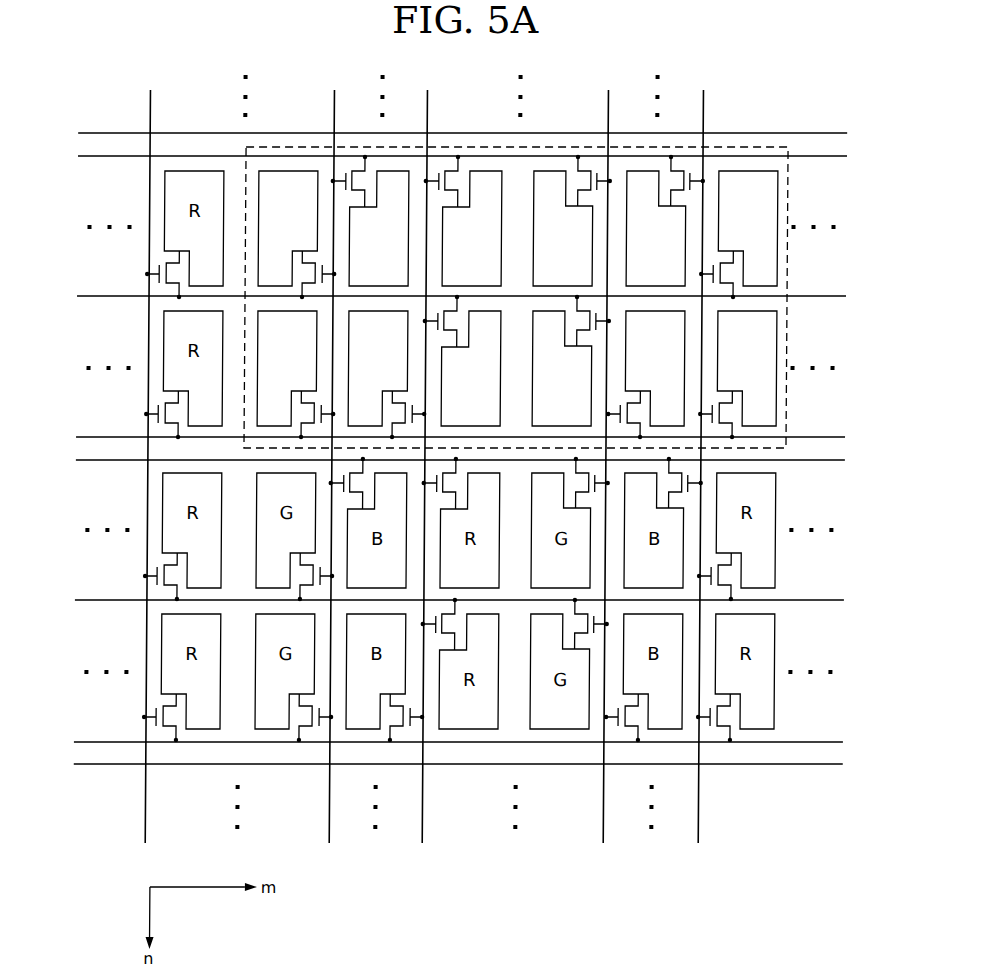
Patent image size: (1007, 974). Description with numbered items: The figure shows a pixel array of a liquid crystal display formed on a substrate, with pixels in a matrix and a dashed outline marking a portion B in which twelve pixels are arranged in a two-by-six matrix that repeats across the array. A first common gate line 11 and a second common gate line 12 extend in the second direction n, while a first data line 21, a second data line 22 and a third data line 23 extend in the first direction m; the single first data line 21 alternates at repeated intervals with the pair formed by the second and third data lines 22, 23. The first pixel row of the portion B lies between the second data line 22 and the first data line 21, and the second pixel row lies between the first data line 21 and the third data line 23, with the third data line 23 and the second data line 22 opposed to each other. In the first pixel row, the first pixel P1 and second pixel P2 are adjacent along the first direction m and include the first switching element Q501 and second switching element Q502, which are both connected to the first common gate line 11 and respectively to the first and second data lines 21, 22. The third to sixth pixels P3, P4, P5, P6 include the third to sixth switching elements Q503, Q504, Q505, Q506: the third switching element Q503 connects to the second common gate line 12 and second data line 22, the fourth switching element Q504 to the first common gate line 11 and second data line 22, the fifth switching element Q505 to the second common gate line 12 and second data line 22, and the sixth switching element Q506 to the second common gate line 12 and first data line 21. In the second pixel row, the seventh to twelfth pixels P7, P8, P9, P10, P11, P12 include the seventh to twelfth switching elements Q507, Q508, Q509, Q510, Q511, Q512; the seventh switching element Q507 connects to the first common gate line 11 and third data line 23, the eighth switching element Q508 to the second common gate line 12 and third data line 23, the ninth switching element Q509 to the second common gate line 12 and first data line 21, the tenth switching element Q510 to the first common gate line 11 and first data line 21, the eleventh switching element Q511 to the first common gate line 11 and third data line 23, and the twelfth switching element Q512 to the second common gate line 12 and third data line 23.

The first common gate line 11 is at (469, 456).
The second common gate line 12 is at (424, 456).
The first data line 21 is at (447, 447).
The second data line 22 is at (448, 459).
The third data line 23 is at (448, 437).
The portion B is at (756, 147).
The first pixel P1 is at (288, 228).
The second pixel P2 is at (379, 228).
The third pixel P3 is at (472, 228).
The fourth pixel P4 is at (563, 228).
The fifth pixel P5 is at (656, 228).
The sixth pixel P6 is at (748, 228).
The seventh pixel P7 is at (287, 368).
The eighth pixel P8 is at (378, 368).
The ninth pixel P9 is at (471, 368).
The tenth pixel P10 is at (562, 368).
The eleventh pixel P11 is at (655, 368).
The twelfth pixel P12 is at (747, 368).
The first switching element Q501 is at (318, 278).
The second switching element Q502 is at (363, 181).
The third switching element Q503 is at (456, 181).
The fourth switching element Q504 is at (581, 180).
The fifth switching element Q505 is at (674, 180).
The sixth switching element Q506 is at (717, 278).
The seventh switching element Q507 is at (317, 418).
The eighth switching element Q508 is at (408, 418).
The ninth switching element Q509 is at (455, 321).
The tenth switching element Q510 is at (580, 320).
The eleventh switching element Q511 is at (624, 418).
The twelfth switching element Q512 is at (716, 418).